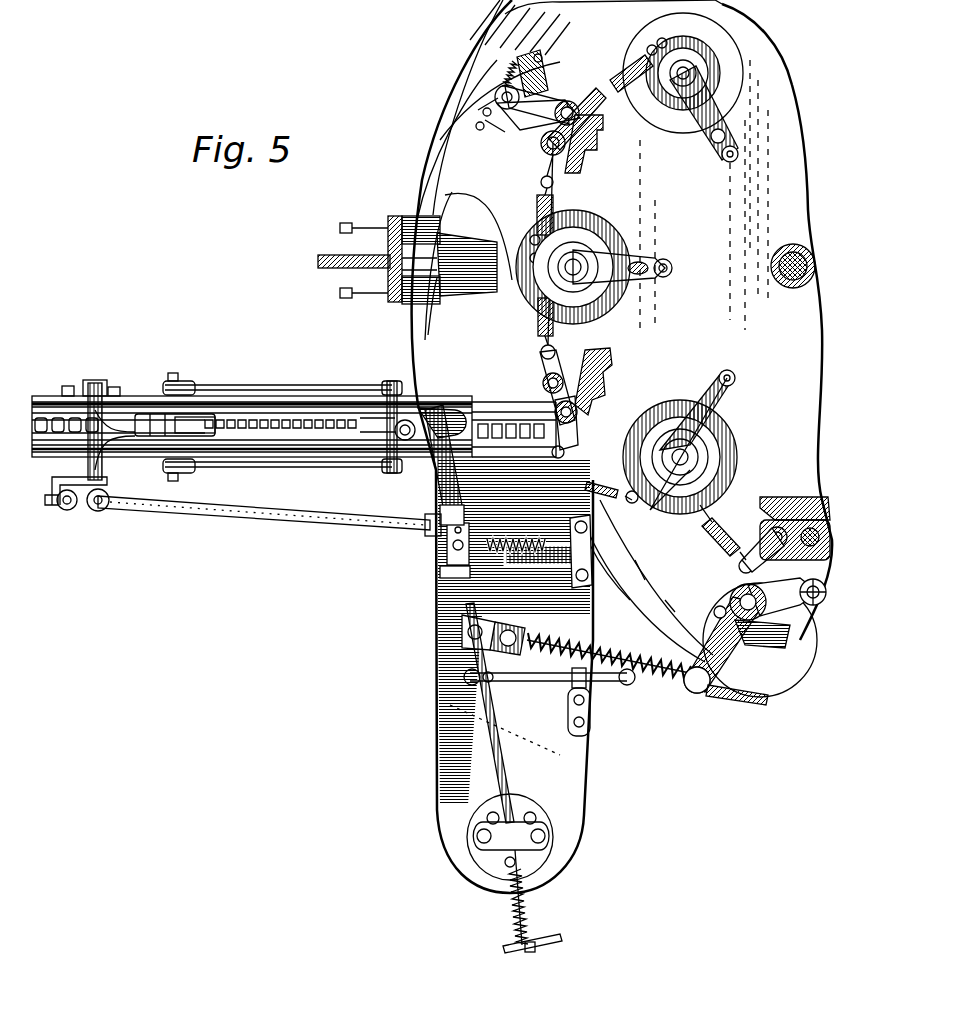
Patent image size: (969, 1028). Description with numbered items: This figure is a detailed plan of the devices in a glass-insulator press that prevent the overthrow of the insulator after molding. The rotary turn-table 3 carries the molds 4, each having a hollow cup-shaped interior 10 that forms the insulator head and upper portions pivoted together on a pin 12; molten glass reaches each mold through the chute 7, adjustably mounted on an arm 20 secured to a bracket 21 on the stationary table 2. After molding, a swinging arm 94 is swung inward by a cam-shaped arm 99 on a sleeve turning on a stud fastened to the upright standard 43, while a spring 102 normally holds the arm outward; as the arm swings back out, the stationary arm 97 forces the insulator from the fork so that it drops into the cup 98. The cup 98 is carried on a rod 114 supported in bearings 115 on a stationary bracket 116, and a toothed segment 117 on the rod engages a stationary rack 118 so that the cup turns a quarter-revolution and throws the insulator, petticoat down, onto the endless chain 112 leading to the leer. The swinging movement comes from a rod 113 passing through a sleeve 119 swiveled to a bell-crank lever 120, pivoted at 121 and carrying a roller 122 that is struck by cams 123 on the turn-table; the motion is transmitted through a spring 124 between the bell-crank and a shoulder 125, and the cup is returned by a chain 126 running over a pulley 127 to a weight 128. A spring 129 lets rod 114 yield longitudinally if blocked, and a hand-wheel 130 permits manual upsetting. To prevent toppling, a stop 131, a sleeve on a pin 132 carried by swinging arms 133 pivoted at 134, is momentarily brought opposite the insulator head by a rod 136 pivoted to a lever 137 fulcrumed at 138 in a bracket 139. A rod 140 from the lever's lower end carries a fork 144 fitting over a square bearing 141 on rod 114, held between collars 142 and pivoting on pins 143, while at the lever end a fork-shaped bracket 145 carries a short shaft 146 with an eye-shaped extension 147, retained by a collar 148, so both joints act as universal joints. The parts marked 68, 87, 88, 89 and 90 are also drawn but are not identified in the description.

The stationary table 2 is at (648, 581).
The rotary turn-table 3 is at (622, 320).
The molds 4 is at (670, 125).
The chute 7 is at (462, 233).
The hollow cup-shaped interior 10 is at (580, 272).
The pin 12 is at (725, 160).
The arm 20 is at (440, 306).
The bracket 21 is at (335, 252).
The upright standard 43 is at (595, 148).
The disk 68 is at (779, 258).
The rod 87 is at (545, 188).
The turnbuckle 88 is at (552, 212).
The link 89 is at (590, 85).
The pivot 90 is at (580, 113).
The swinging arm 94 is at (470, 192).
The stationary arm 97 is at (522, 150).
The cup 98 is at (425, 405).
The cam-shaped arm 99 is at (455, 125).
The spring 102 is at (516, 72).
The endless chain 112 is at (52, 394).
The rod 113 is at (610, 650).
The rod 114 is at (462, 582).
The bearings 115 is at (505, 840).
The stationary bracket 116 is at (566, 808).
The toothed segment 117 is at (440, 570).
The stationary rack 118 is at (592, 550).
The sleeve 119 is at (714, 698).
The bell-crank lever 120 is at (738, 640).
The pivot 121 is at (752, 620).
The roller 122 is at (814, 607).
The cams 123 is at (565, 100).
The spring 124 is at (655, 680).
The shoulder 125 is at (528, 628).
The chain 126 is at (548, 682).
The pulley 127 is at (590, 690).
The weight 128 is at (628, 685).
The spring 129 is at (530, 900).
The hand-wheel 130 is at (510, 948).
The stop 131 is at (405, 443).
The pin 132 is at (380, 385).
The swinging arms 133 is at (232, 385).
The pivot 134 is at (172, 380).
The rod 136 is at (248, 425).
The lever 137 is at (130, 390).
The fulcrum 138 is at (95, 383).
The bracket 139 is at (70, 386).
The rod 140 is at (280, 525).
The square bearing 141 is at (425, 535).
The collars 142 is at (360, 578).
The pivot-pins 143 is at (428, 518).
The fork 144 is at (425, 540).
The fork-shaped bracket 145 is at (55, 478).
The short shaft 146 is at (98, 512).
The eye-shaped extension 147 is at (50, 505).
The collar 148 is at (70, 510).